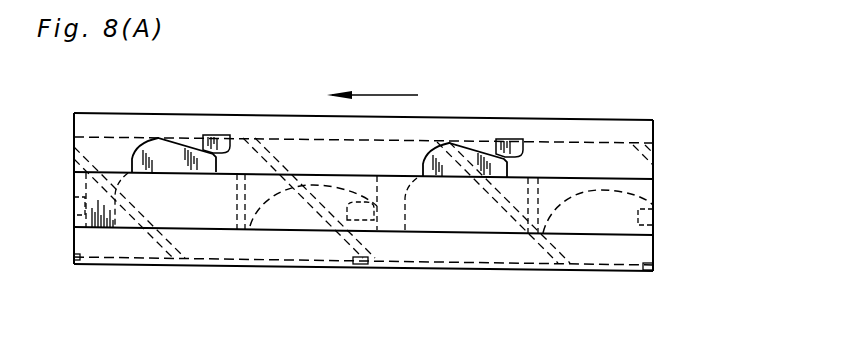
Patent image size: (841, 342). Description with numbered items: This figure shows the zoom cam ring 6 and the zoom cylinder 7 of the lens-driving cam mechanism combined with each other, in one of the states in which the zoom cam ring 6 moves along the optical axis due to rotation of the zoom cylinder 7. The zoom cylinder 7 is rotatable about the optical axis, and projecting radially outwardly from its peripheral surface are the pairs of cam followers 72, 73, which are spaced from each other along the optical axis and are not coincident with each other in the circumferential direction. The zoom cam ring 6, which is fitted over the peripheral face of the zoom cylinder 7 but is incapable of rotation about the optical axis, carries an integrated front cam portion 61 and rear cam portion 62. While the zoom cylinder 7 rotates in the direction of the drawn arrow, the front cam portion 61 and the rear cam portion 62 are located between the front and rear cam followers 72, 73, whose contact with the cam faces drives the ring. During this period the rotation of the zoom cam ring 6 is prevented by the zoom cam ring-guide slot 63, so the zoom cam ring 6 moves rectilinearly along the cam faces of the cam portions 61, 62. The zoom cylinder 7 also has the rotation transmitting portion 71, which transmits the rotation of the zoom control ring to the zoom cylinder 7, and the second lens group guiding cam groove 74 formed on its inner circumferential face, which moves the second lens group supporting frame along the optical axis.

The zoom cam ring 6 is at (659, 186).
The zoom cylinder 7 is at (624, 116).
The front cam portion 61 is at (145, 150).
The rear cam portion 62 is at (282, 193).
The zoom cam ring-guide slot 63 is at (238, 205).
The rotation transmitting portion 71 is at (362, 265).
The cam follower 72 is at (220, 142).
The cam follower 73 is at (363, 212).
The second lens group guiding cam groove 74 is at (153, 242).